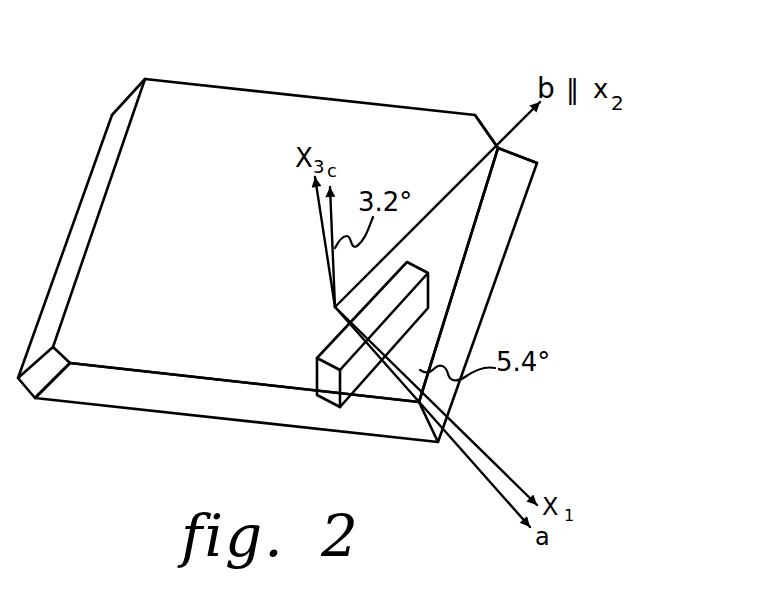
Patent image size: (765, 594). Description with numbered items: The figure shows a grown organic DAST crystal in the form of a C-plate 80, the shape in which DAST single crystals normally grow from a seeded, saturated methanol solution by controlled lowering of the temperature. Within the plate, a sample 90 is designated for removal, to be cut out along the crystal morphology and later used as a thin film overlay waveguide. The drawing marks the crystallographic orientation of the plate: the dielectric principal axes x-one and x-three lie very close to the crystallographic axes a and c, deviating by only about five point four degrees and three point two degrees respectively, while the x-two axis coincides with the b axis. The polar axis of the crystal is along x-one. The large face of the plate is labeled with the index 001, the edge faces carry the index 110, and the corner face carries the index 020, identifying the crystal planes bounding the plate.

The C-plate 80 is at (344, 222).
The sample 90 is at (420, 270).
The (001) crystal face 001 is at (275, 240).
The (110) crystal faces 110 is at (243, 388).
The (020) crystal face 020 is at (525, 148).